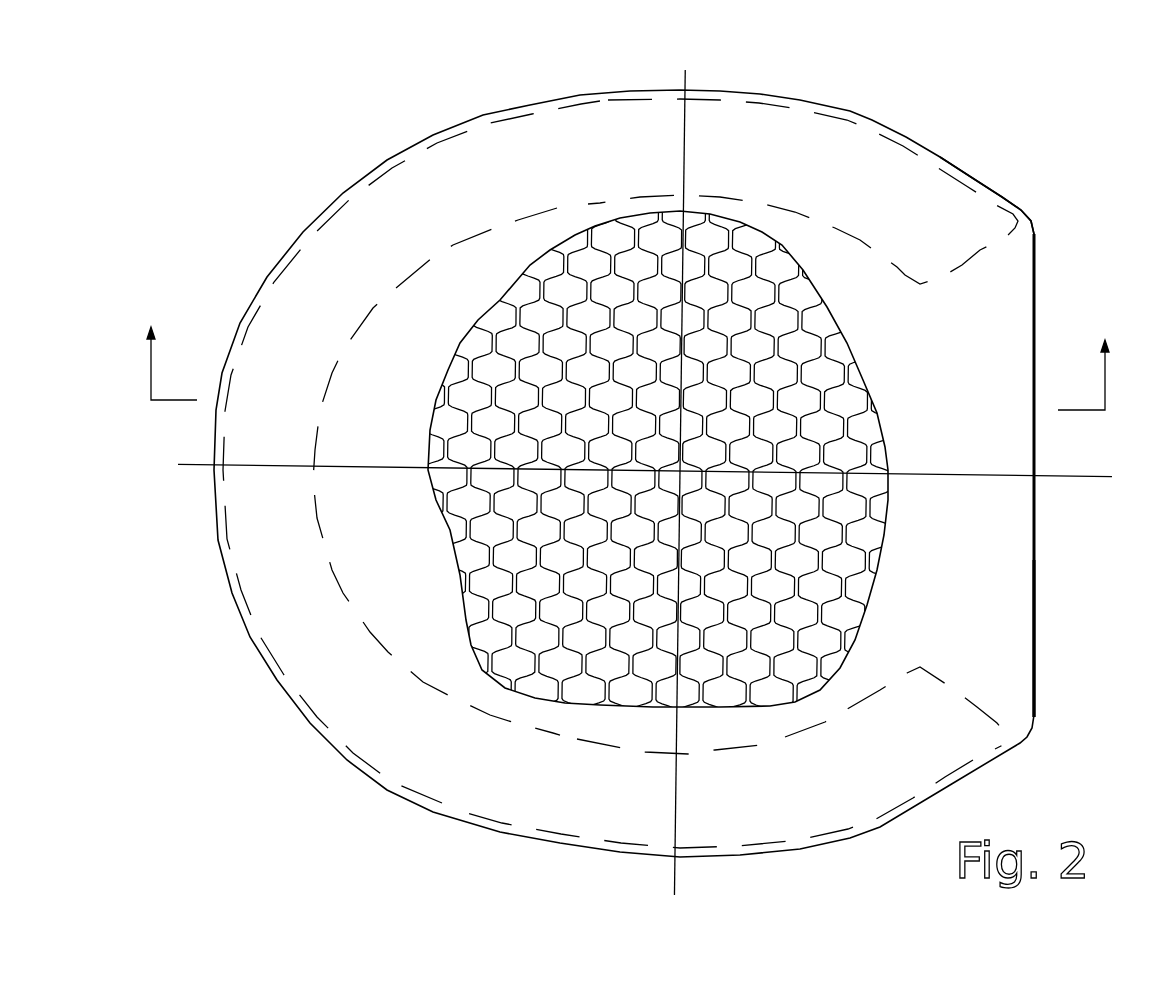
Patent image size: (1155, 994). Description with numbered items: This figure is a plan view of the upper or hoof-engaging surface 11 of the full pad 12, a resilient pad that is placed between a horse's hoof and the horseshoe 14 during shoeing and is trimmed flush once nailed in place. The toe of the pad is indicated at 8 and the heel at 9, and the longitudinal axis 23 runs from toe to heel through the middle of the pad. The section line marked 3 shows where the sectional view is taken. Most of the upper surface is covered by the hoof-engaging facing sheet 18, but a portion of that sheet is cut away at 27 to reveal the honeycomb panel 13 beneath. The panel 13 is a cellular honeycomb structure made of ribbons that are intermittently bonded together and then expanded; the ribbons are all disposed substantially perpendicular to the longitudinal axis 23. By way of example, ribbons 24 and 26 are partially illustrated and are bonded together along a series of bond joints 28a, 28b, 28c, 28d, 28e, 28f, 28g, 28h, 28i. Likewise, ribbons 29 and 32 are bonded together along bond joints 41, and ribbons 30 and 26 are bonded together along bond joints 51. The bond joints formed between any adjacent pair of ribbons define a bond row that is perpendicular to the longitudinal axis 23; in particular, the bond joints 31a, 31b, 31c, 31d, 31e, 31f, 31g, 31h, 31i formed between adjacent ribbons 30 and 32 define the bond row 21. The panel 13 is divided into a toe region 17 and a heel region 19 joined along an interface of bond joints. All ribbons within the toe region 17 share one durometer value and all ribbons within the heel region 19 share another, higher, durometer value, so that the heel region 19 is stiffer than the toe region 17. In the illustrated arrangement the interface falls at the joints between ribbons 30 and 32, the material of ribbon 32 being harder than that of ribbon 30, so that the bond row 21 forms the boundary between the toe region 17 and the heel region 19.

The section line for FIG. 3 is at (628, 368).
The toe 8 is at (215, 510).
The heel 9 is at (1035, 547).
The upper or hoof-engaging surface 11 is at (1036, 620).
The full pad 12 is at (1040, 288).
The honeycomb panel 13 is at (785, 245).
The horseshoe 14 is at (1002, 720).
The toe region 17 is at (531, 228).
The hoof-engaging facing sheet 18 is at (961, 537).
The heel region 19 is at (1003, 347).
The bond row 21 is at (684, 78).
The longitudinal axis 23 is at (1057, 480).
The ribbon 24 is at (606, 677).
The ribbon 26 is at (650, 674).
The cut-away portion 27 is at (457, 350).
The bond joint 28a is at (634, 672).
The bond joint 28b is at (633, 613).
The bond joint 28c is at (633, 560).
The bond joint 28d is at (633, 506).
The bond joint 28e is at (633, 453).
The bond joint 28f is at (633, 400).
The bond joint 28g is at (633, 348).
The bond joint 28h is at (633, 294).
The bond joint 28i is at (633, 240).
The ribbon 29 is at (696, 672).
The ribbon 30 is at (667, 679).
The bond joint 31a is at (706, 668).
The bond joint 31b is at (684, 613).
The bond joint 31c is at (684, 560).
The bond joint 31d is at (684, 506).
The bond joint 31e is at (684, 453).
The bond joint 31f is at (684, 400).
The bond joint 31g is at (684, 348).
The bond joint 31h is at (684, 294).
The bond joint 31i is at (684, 240).
The ribbon 32 is at (683, 681).
The bond joints 41 is at (700, 642).
The bond joints 51 is at (660, 681).